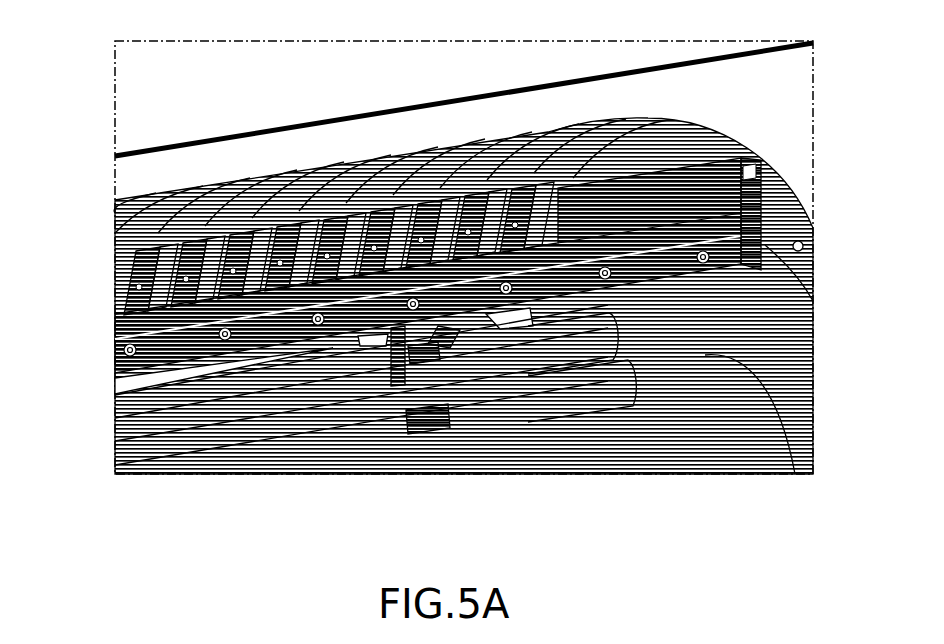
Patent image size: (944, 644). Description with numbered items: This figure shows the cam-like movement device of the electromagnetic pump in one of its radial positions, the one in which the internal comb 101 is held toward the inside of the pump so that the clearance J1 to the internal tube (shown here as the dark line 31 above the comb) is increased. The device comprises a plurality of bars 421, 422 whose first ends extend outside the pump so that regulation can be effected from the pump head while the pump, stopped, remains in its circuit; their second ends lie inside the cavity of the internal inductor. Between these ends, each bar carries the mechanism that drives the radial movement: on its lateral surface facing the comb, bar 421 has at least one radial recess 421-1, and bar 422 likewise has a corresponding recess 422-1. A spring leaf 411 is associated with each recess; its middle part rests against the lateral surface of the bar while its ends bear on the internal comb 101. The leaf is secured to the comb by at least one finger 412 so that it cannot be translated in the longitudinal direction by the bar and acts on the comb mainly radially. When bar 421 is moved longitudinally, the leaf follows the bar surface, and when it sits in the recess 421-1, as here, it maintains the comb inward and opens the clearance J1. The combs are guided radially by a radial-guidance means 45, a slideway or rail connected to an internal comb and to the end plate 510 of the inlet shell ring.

The sheet / substrate 31 is at (232, 127).
The clearance J1 is at (551, 109).
The internal comb 101 is at (653, 140).
The radial-guidance means 45 is at (733, 150).
The end plate 510 is at (767, 338).
The spring leaf 411 is at (425, 343).
The finger 412 is at (440, 326).
The bar 421 is at (140, 398).
The bar 422 is at (137, 450).
The radial recess 421-1 is at (313, 363).
The second rail block 422-1 is at (413, 413).